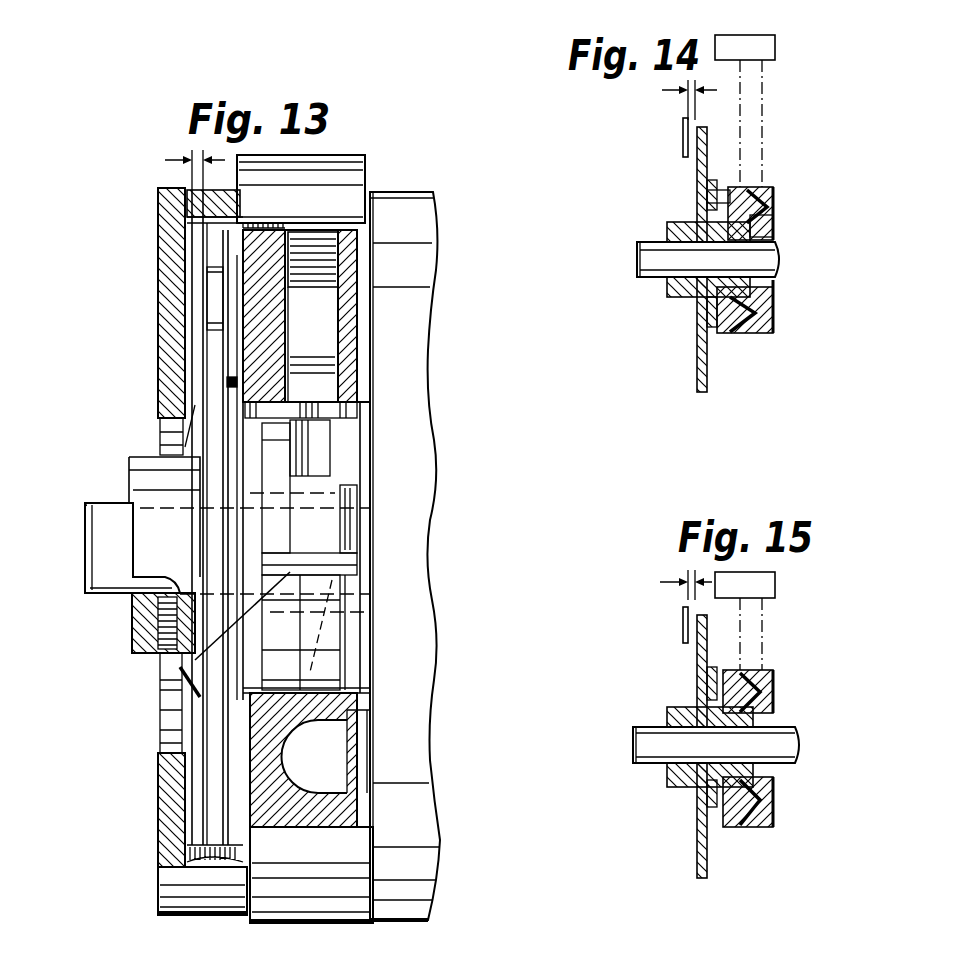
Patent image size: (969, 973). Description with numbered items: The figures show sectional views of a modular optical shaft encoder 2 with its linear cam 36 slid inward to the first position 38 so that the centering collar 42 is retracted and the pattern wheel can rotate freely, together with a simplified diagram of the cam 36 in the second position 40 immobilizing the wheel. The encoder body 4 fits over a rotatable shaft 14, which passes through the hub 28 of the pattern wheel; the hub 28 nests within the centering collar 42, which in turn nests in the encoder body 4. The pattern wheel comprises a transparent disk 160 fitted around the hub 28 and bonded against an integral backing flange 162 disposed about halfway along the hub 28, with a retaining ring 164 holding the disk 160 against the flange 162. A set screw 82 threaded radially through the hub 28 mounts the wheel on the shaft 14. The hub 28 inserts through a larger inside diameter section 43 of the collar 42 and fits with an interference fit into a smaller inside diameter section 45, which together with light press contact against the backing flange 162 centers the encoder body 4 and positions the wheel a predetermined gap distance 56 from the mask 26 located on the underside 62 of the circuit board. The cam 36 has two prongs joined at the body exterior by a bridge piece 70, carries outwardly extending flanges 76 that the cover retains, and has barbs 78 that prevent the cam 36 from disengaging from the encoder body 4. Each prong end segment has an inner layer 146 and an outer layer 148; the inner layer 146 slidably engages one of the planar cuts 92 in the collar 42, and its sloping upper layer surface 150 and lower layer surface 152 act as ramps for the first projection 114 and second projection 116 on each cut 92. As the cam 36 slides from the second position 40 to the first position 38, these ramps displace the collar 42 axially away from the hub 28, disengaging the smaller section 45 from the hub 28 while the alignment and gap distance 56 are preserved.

In FIG. 13, the modular optical shaft encoder 2 is at (403, 180).
In FIG. 13, the encoder body 4 is at (335, 925).
In FIG. 14, the encoder body 4 is at (773, 200).
In FIG. 13, the rotatable shaft 14 is at (87, 590).
In FIG. 14, the rotatable shaft 14 is at (637, 262).
In FIG. 15, the rotatable shaft 14 is at (633, 743).
In FIG. 13, the mask 26 is at (187, 293).
In FIG. 14, the mask 26 is at (682, 137).
In FIG. 15, the mask 26 is at (682, 622).
In FIG. 13, the hub 28 is at (133, 481).
In FIG. 14, the hub 28 is at (680, 297).
In FIG. 15, the hub 28 is at (710, 747).
In FIG. 13, the linear cam 36 is at (316, 320).
In FIG. 14, the linear cam 36 is at (752, 143).
In FIG. 15, the linear cam 36 is at (757, 647).
In FIG. 13, the first position 38 is at (400, 153).
In FIG. 15, the first position 38 is at (794, 610).
In FIG. 14, the second position 40 is at (796, 107).
In FIG. 13, the centering collar 42 is at (283, 698).
In FIG. 14, the centering collar 42 is at (760, 223).
In FIG. 14, the larger inside diameter section 43 is at (727, 307).
In FIG. 15, the larger inside diameter section 43 is at (747, 790).
In FIG. 14, the smaller inside diameter section 45 is at (767, 293).
In FIG. 15, the smaller inside diameter section 45 is at (767, 783).
In FIG. 13, the predetermined gap distance 56 is at (196, 170).
In FIG. 14, the predetermined gap distance 56 is at (688, 80).
In FIG. 15, the predetermined gap distance 56 is at (688, 572).
In FIG. 13, the underside 62 is at (190, 385).
In FIG. 13, the bridge piece 70 is at (326, 178).
In FIG. 13, the outwardly extending flanges 76 is at (325, 248).
In FIG. 13, the barb 78 is at (300, 438).
In FIG. 13, the set screw 82 is at (147, 627).
In FIG. 13, the planar cuts 92 is at (360, 530).
In FIG. 13, the first projection 114 is at (272, 527).
In FIG. 13, the second projection 116 is at (360, 567).
In FIG. 13, the inner layer 146 is at (320, 718).
In FIG. 13, the outer layer 148 is at (335, 648).
In FIG. 13, the upper layer surface 150 is at (353, 596).
In FIG. 13, the lower layer surface 152 is at (340, 620).
In FIG. 13, the transparent disk 160 is at (213, 775).
In FIG. 14, the transparent disk 160 is at (697, 357).
In FIG. 15, the transparent disk 160 is at (697, 833).
In FIG. 13, the integral backing flange 162 is at (223, 711).
In FIG. 14, the integral backing flange 162 is at (707, 184).
In FIG. 15, the integral backing flange 162 is at (707, 670).
In FIG. 13, the retaining ring 164 is at (190, 693).